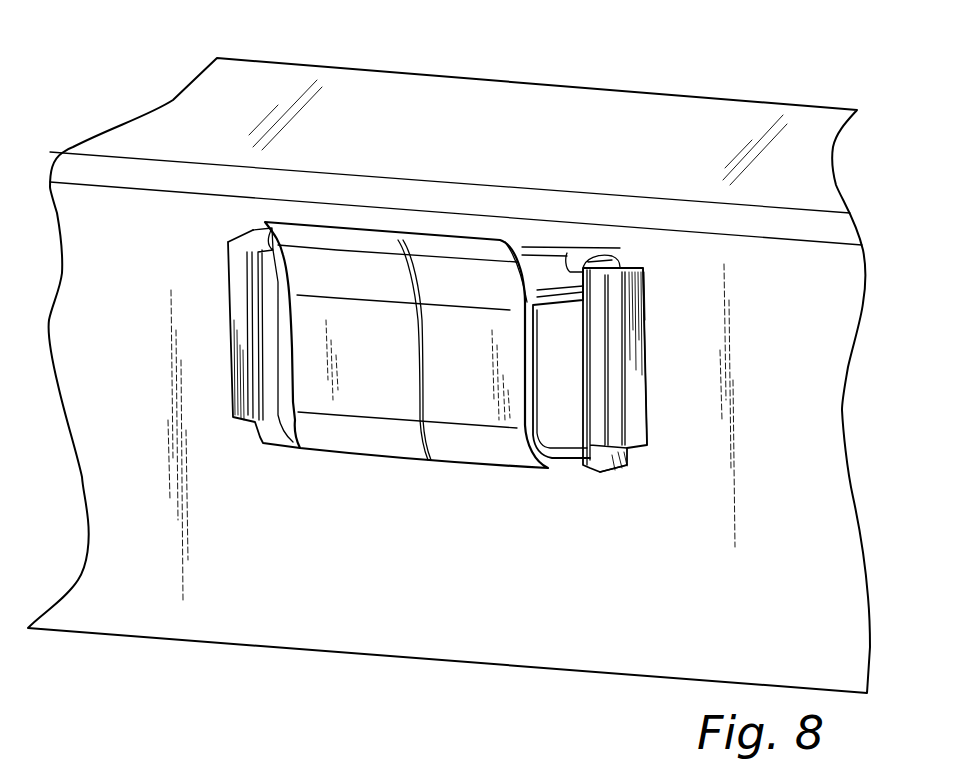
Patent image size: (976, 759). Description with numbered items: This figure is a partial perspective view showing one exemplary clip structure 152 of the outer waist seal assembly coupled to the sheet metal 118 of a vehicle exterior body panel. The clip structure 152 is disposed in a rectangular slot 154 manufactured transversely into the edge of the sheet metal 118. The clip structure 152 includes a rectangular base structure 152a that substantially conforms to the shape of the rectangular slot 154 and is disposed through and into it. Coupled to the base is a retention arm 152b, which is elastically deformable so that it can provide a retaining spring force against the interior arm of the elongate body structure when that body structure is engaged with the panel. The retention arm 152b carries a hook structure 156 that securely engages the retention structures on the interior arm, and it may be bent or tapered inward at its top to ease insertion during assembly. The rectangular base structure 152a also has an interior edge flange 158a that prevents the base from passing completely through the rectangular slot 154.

The sheet metal 118 is at (627, 585).
The clip structure 152 is at (547, 238).
The rectangular base structure 152a is at (634, 257).
The retention arm 152b is at (392, 372).
The rectangular slot 154 is at (562, 395).
The hook structure 156 is at (352, 230).
The interior edge flange 158a is at (647, 348).